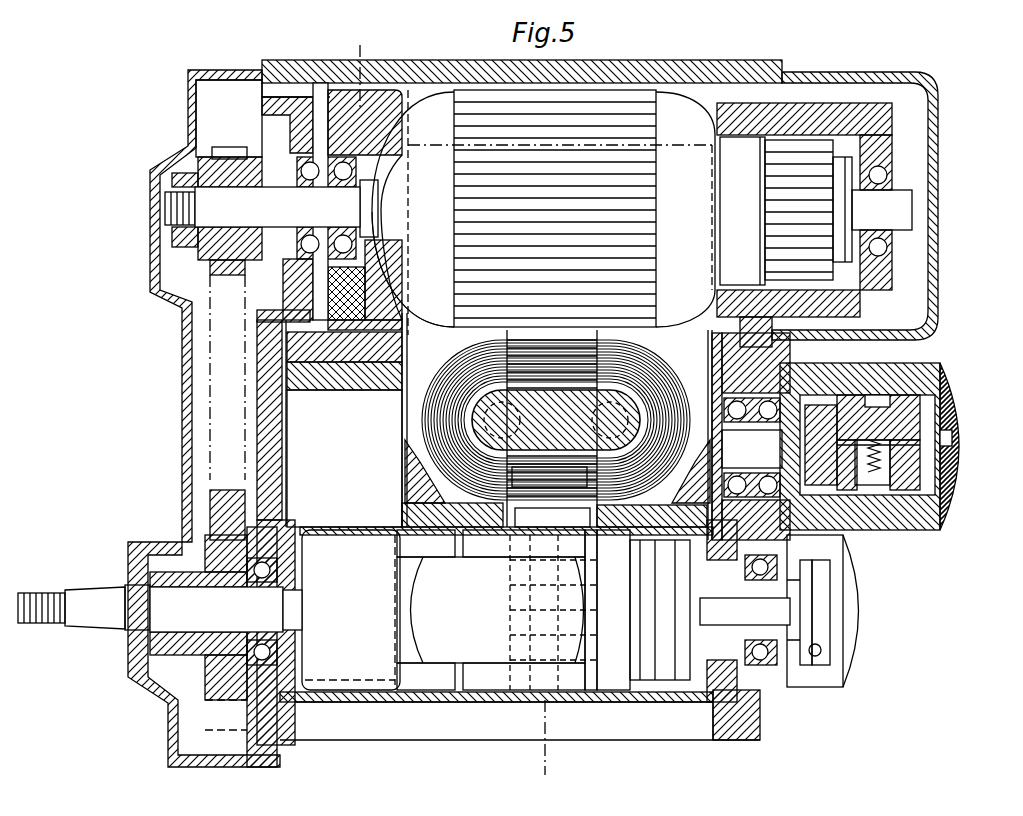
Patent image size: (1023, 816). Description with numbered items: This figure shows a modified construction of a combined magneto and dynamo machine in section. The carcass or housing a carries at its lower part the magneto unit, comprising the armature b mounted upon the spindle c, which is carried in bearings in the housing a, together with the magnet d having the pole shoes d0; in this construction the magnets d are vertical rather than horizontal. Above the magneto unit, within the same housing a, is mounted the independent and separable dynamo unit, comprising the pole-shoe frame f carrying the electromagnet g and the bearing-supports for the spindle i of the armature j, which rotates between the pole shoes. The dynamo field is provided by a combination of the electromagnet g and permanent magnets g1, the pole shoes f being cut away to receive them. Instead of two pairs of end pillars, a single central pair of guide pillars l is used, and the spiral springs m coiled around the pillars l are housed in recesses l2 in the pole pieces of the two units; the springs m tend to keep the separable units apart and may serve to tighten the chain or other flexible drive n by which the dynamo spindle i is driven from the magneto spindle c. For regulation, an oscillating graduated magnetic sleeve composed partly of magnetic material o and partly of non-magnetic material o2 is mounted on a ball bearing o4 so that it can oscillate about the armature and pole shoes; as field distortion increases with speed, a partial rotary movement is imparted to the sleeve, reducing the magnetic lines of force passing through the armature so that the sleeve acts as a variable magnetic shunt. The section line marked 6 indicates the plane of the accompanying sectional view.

The housing a is at (670, 64).
The section line 6 is at (449, 411).
The magnetic sleeve o is at (402, 97).
The non-magnetic material o2 is at (388, 292).
The ball bearing o4 is at (360, 236).
The armature j is at (555, 208).
The spindle i is at (538, 210).
The flexible drive n is at (227, 400).
The magnet d is at (344, 458).
The pole-shoe frame f is at (416, 420).
The electromagnet g is at (662, 372).
The permanent magnets g1 is at (662, 552).
The spindle c is at (708, 645).
The armature b is at (491, 610).
The spiral spring m is at (506, 622).
The guide pillars l is at (585, 596).
The recesses l2 is at (592, 655).
The pole shoes d0 is at (655, 700).